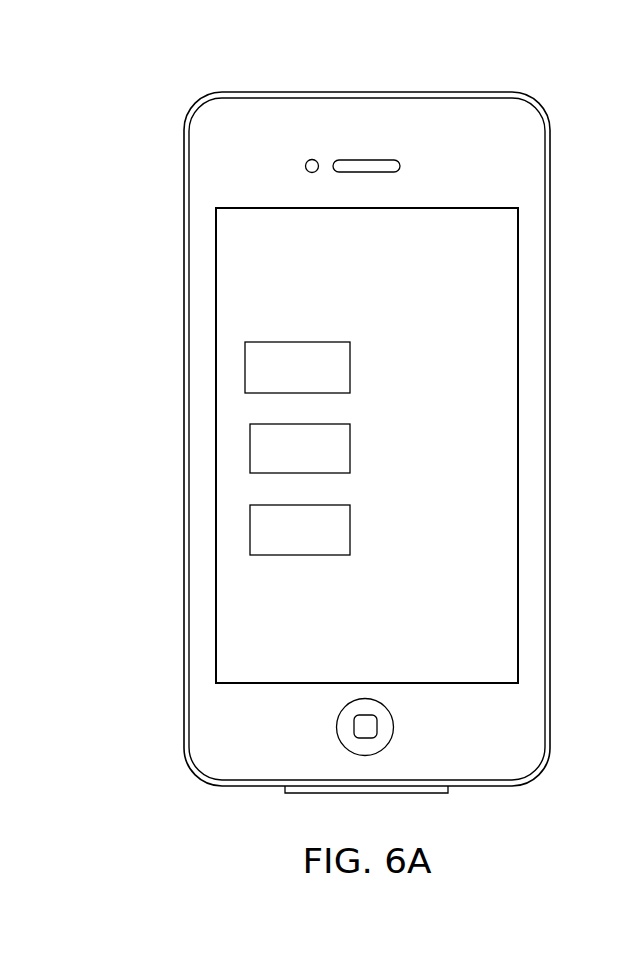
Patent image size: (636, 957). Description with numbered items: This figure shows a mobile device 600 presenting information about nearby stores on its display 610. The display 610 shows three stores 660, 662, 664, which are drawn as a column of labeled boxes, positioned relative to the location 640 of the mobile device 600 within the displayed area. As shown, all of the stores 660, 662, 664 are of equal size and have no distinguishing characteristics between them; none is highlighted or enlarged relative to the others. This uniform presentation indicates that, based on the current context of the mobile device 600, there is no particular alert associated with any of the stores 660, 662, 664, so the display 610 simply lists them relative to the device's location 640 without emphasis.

The mobile device 600 is at (277, 92).
The display 610 is at (240, 684).
The location 640 is at (458, 600).
The store 660 is at (245, 361).
The store 662 is at (250, 444).
The store 664 is at (250, 525).